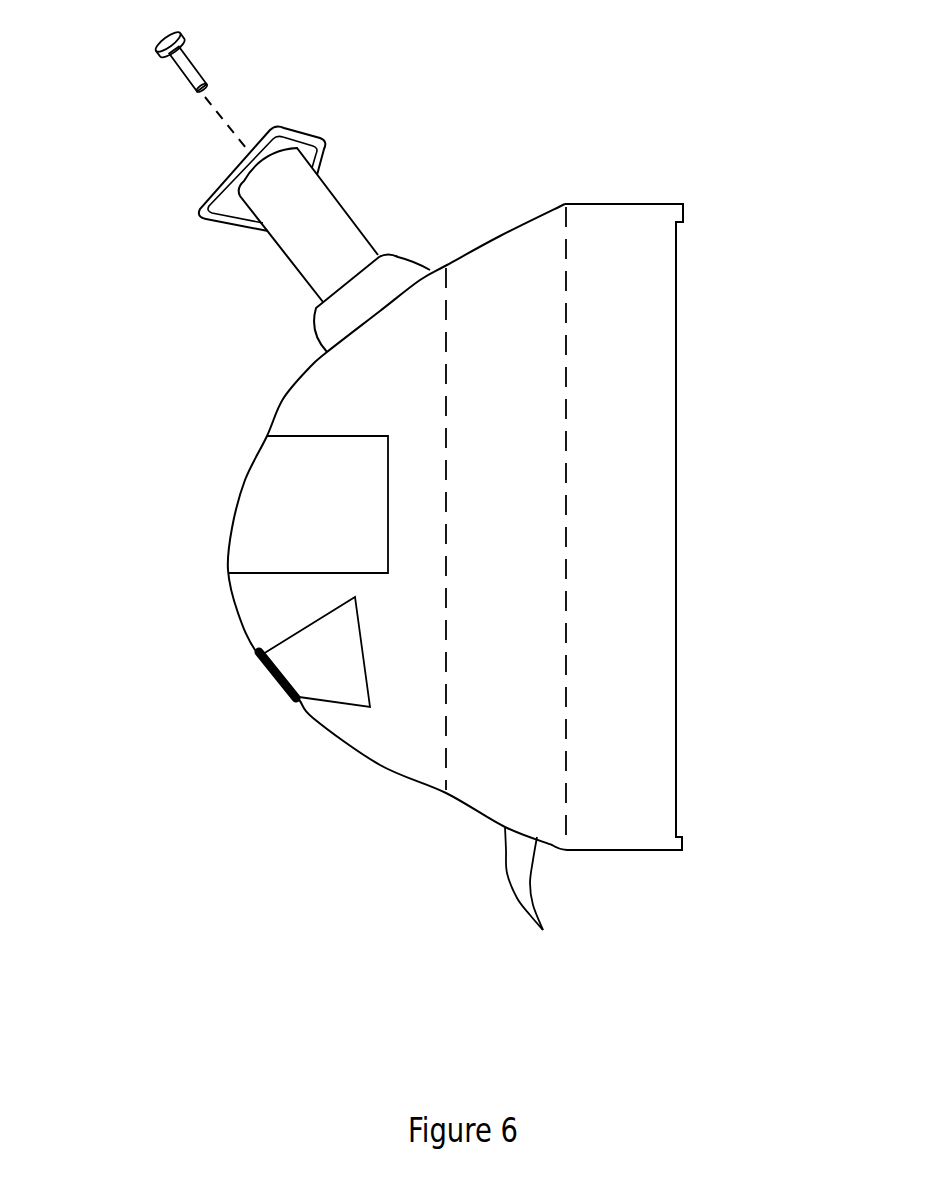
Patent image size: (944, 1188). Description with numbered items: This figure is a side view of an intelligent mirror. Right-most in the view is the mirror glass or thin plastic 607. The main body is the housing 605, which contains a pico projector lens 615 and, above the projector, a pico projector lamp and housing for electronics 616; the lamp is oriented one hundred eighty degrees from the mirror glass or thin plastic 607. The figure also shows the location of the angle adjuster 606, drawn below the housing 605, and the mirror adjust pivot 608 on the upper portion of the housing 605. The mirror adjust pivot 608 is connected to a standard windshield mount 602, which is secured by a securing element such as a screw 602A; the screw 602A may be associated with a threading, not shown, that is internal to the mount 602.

The standard windshield mount 602 is at (197, 186).
The screw 602A is at (153, 58).
The housing 605 is at (282, 400).
The angle adjuster 606 is at (500, 880).
The mirror glass or thin plastic 607 is at (689, 577).
The mirror adjust pivot 608 is at (303, 312).
The pico projector lens 615 is at (255, 675).
The pico projector lamp and housing for electronics 616 is at (240, 528).